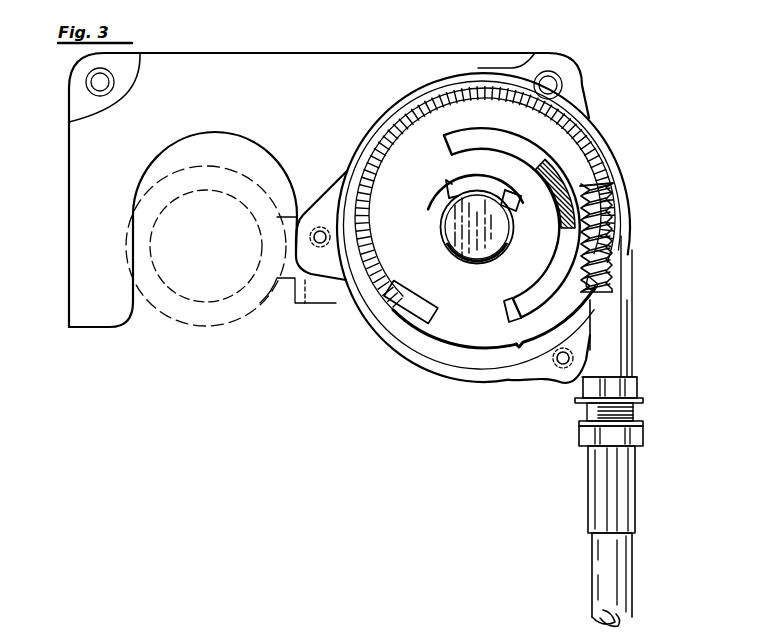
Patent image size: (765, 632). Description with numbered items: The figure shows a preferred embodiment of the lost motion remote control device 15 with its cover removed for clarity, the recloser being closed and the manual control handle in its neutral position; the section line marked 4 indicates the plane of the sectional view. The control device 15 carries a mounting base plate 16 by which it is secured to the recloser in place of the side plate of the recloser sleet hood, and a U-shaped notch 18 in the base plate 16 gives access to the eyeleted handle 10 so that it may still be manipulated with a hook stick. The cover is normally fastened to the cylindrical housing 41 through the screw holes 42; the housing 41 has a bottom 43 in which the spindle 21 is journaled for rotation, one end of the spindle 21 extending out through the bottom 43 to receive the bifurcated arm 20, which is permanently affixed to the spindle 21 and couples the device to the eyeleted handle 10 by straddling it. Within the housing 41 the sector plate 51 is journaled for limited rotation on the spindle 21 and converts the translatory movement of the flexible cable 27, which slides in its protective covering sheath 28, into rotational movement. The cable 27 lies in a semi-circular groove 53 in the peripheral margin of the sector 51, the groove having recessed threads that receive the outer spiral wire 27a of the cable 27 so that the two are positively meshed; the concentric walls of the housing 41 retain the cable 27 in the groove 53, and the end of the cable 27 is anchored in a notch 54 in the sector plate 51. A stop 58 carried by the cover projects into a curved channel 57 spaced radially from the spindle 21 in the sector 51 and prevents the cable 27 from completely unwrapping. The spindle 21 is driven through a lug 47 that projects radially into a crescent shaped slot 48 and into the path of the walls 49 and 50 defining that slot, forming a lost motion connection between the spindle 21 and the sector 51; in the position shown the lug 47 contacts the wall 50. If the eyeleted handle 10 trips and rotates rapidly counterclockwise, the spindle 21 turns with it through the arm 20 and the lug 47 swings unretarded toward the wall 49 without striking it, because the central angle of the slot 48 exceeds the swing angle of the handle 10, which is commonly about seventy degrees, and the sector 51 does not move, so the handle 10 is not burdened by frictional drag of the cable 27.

The section line 4- 4 is at (438, 229).
The eyeleted handle 10 is at (183, 326).
The remote control device 15 is at (589, 77).
The mounting base plate 16 is at (85, 190).
The U-shaped notch 18 is at (215, 131).
The bifurcated arm 20 is at (320, 302).
The spindle 21 is at (481, 248).
The flexible cable 27 is at (623, 236).
The outer spiral wire 27a is at (617, 188).
The protective covering sheath 28 is at (610, 588).
The cylindrical housing 41 is at (438, 371).
The screw holes 42 is at (320, 227).
The bottom 43 is at (368, 293).
The lug 47 is at (514, 192).
The crescent shaped slot 48 is at (492, 182).
The wall 49 is at (452, 187).
The wall 50 is at (515, 209).
The sector plate 51 is at (505, 351).
The semi-circular groove 53 is at (589, 281).
The notch 54 is at (438, 312).
The curved channel 57 is at (485, 141).
The stop 58 is at (567, 228).